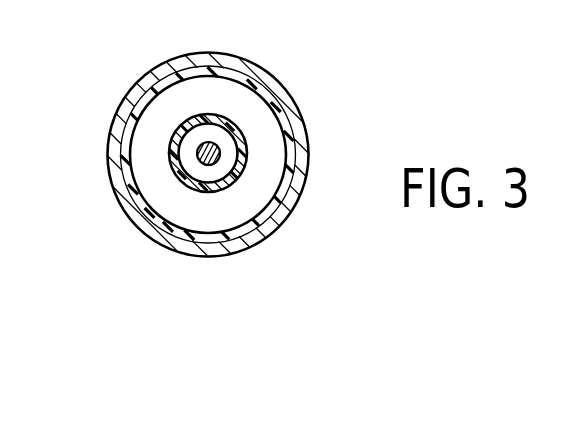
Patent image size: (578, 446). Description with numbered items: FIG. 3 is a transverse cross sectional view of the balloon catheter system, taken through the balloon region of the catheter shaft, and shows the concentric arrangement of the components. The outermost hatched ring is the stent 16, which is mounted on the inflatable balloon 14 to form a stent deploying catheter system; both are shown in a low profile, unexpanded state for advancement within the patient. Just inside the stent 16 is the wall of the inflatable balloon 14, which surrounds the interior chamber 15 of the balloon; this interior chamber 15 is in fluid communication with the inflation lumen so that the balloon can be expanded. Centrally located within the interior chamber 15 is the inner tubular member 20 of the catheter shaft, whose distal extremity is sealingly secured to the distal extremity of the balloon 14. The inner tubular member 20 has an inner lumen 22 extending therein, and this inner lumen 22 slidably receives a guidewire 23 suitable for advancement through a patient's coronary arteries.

The inflatable balloon 14 is at (126, 151).
The interior chamber 15 is at (167, 202).
The stent 16 is at (168, 72).
The inner tubular member 20 is at (246, 137).
The inner lumen 22 is at (218, 167).
The guidewire 23 is at (210, 150).